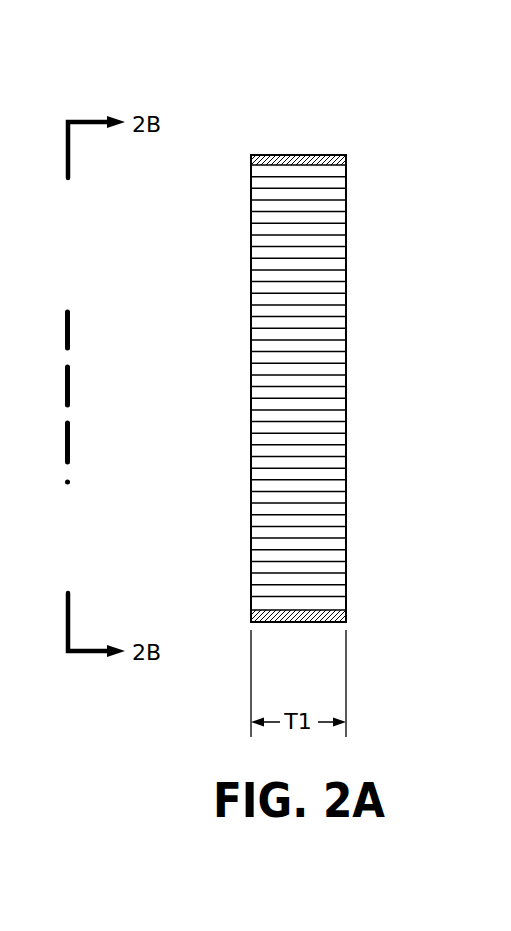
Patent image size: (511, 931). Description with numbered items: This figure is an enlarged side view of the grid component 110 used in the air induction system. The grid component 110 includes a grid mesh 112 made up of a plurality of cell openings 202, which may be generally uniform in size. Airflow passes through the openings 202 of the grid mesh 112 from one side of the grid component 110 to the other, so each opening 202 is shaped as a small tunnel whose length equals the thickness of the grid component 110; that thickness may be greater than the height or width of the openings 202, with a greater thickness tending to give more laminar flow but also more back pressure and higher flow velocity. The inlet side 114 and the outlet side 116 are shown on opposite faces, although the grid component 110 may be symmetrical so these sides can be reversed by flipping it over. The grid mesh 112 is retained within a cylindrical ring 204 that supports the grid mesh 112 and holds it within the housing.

The grid component 110 is at (205, 83).
The grid mesh 112 is at (371, 358).
The inlet side 114 is at (203, 410).
The outlet side 116 is at (365, 415).
The cell openings 202 is at (347, 297).
The cylindrical ring 204 is at (346, 154).